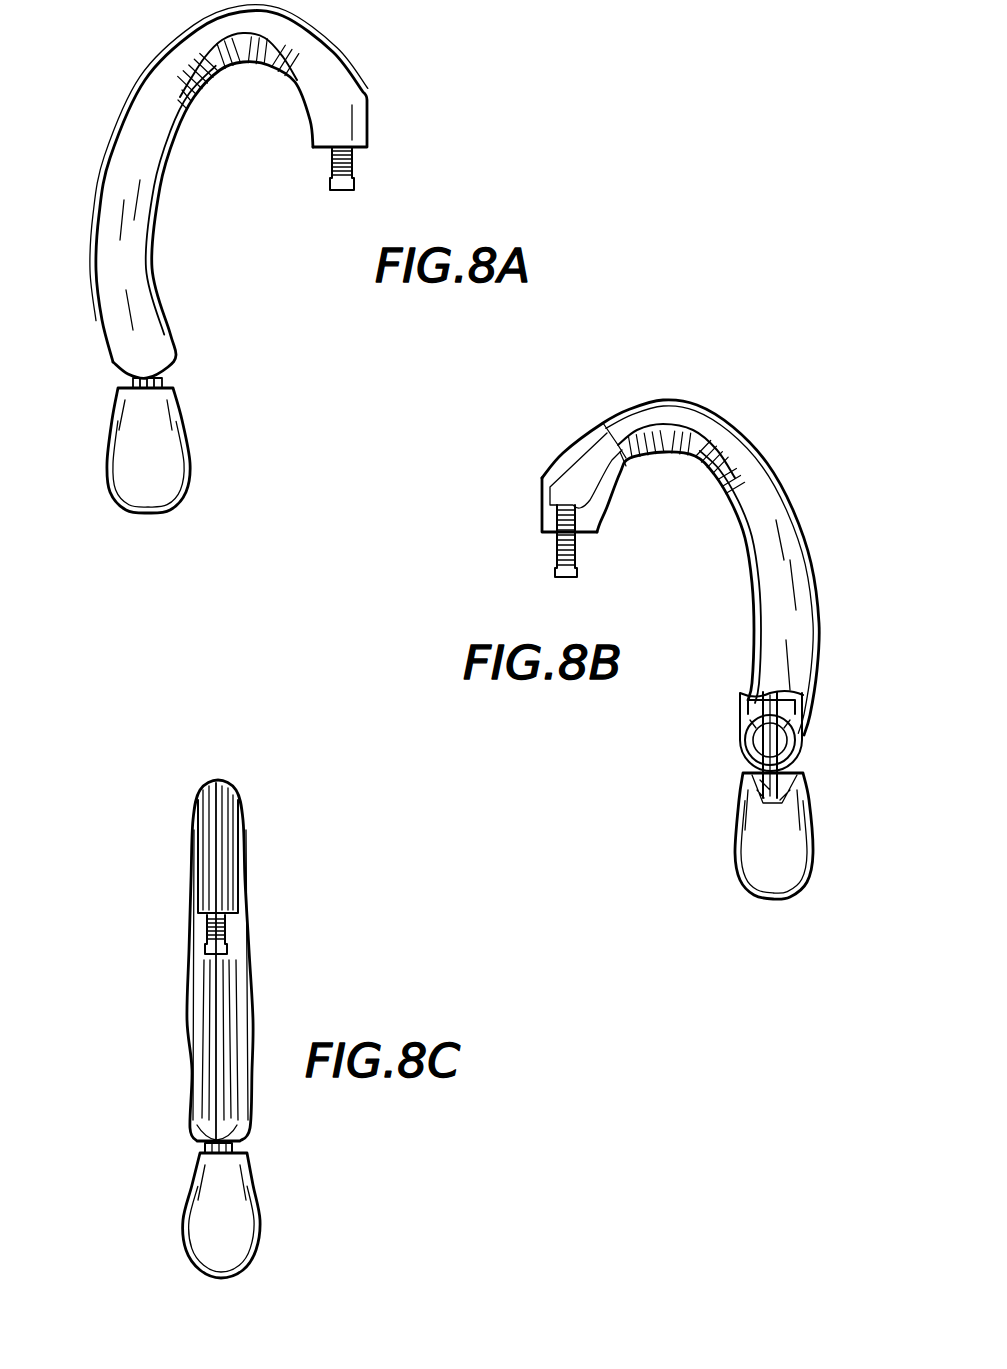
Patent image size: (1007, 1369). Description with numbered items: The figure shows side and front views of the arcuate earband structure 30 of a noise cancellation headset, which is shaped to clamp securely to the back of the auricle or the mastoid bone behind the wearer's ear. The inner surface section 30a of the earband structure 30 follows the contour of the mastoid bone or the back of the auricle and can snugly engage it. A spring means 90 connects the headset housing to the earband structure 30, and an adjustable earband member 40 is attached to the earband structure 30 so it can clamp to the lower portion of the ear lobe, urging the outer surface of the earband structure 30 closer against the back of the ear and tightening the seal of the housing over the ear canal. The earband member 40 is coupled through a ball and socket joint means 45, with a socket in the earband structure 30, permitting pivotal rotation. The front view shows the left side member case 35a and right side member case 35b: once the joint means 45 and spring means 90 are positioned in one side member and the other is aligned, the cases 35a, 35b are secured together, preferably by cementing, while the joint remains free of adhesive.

In FIG. 8A, the arcuate earband structure 30 is at (113, 152).
In FIG. 8B, the arcuate earband structure 30 is at (690, 402).
In FIG. 8A, the inner surface section 30a is at (240, 66).
In FIG. 8B, the inner surface section 30a is at (681, 459).
In FIG. 8A, the spring means 90 is at (355, 178).
In FIG. 8B, the spring means 90 is at (575, 535).
In FIG. 8C, the spring means 90 is at (225, 935).
In FIG. 8A, the earband member 40 is at (107, 465).
In FIG. 8B, the earband member 40 is at (812, 852).
In FIG. 8C, the earband member 40 is at (221, 1215).
In FIG. 8B, the ball and socket joint means 45 is at (796, 770).
In FIG. 8C, the ball and socket joint means 45 is at (200, 1150).
In FIG. 8C, the left side member case 35a is at (250, 970).
In FIG. 8C, the right side member case 35b is at (190, 945).